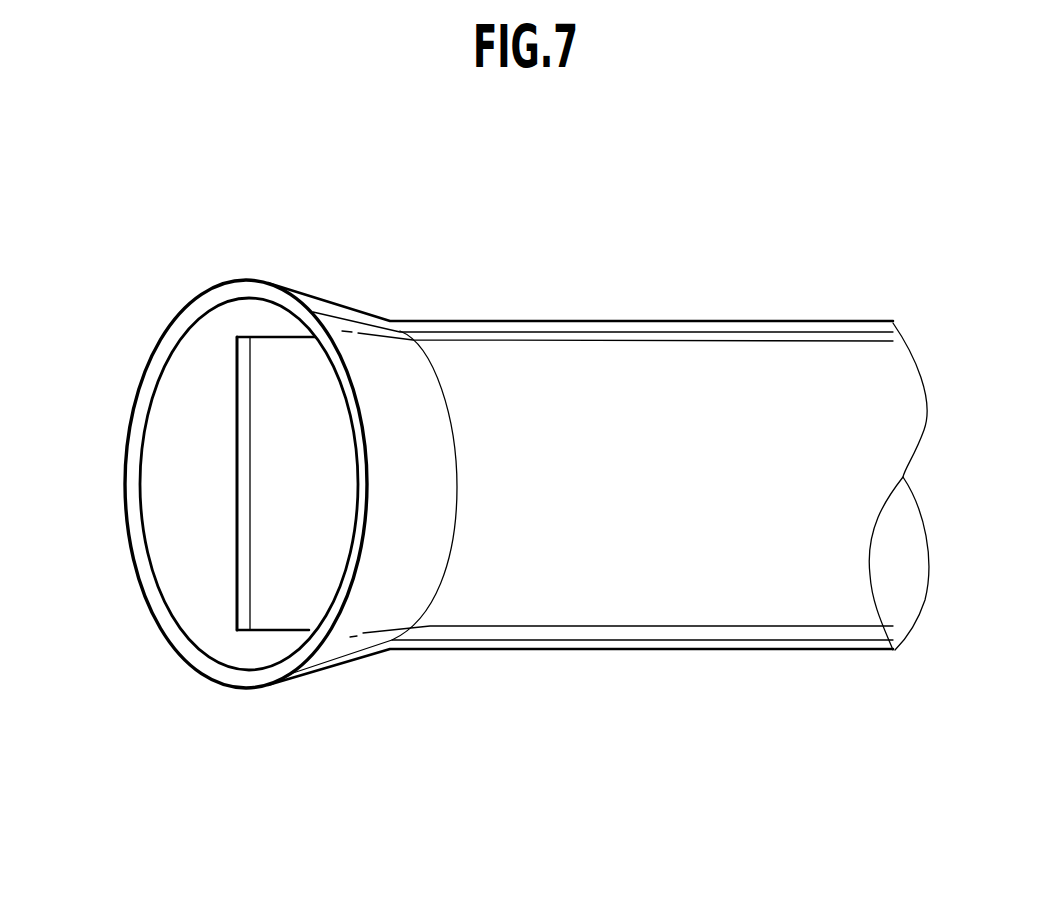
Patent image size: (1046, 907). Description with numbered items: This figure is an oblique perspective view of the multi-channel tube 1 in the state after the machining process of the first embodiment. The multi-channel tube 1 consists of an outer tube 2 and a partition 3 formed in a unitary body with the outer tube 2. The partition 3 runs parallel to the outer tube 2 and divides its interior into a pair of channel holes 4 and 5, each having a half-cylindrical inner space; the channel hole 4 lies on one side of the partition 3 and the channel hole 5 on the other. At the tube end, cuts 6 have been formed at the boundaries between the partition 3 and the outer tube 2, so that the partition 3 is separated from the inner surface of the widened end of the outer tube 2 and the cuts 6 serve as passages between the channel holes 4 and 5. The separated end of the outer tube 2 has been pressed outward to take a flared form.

The multi-channel tube 1 is at (659, 322).
The outer tube 2 is at (666, 632).
The partition 3 is at (243, 483).
The channel hole 4 is at (308, 520).
The channel hole 5 is at (213, 582).
The cuts 6 is at (244, 318).